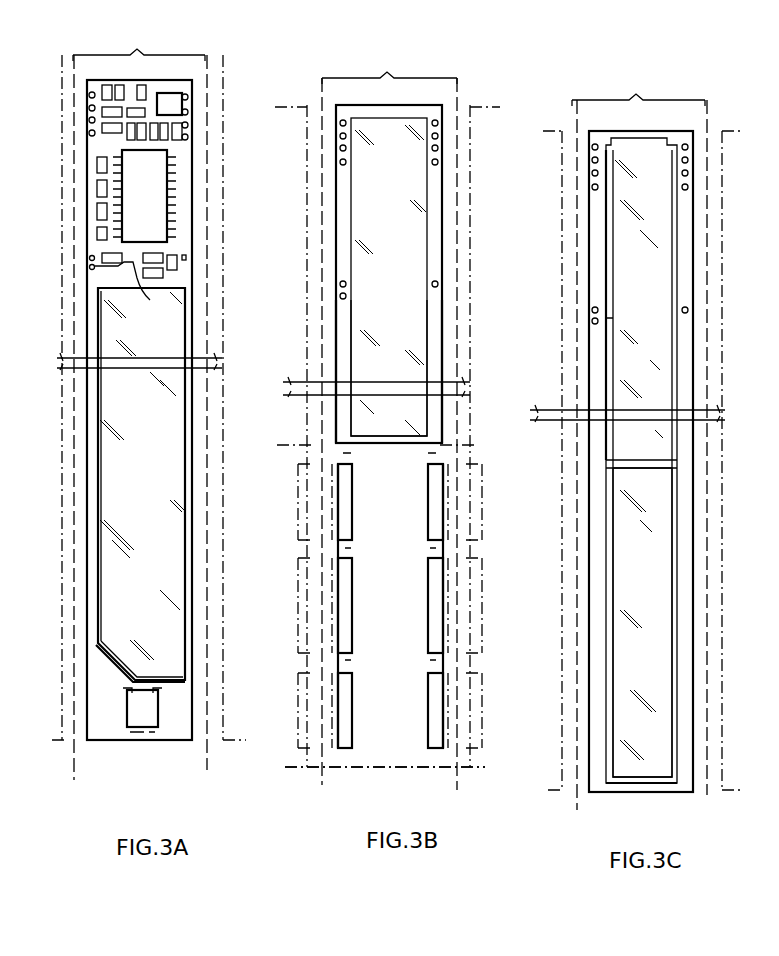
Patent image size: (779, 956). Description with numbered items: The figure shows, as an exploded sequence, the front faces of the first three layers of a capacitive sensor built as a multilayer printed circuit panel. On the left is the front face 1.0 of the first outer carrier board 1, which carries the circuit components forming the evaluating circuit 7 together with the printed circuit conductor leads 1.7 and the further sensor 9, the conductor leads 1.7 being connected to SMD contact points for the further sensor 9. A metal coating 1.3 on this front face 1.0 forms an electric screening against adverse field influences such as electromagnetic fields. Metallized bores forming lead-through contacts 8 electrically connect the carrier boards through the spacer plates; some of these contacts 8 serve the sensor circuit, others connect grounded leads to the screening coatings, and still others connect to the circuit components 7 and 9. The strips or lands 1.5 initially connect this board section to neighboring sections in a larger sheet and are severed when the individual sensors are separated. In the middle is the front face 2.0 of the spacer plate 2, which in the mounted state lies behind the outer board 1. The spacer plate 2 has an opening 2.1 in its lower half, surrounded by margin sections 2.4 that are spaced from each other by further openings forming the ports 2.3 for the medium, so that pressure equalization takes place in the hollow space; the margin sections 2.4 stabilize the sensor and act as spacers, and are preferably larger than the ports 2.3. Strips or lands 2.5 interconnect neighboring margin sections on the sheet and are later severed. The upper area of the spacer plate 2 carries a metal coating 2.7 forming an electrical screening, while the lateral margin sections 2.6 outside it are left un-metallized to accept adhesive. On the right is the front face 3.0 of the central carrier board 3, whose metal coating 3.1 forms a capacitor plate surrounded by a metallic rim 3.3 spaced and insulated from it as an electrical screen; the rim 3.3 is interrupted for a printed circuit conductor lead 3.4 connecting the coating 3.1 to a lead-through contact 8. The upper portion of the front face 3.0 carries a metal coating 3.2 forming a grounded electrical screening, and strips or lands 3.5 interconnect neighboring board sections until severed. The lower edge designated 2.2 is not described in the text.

In FIG. 3A, the first outer carrier board 1 is at (230, 319).
In FIG. 3A, the front face of first outer carrier board 1.0 is at (139, 42).
In FIG. 3A, the metal coating 1.3 is at (167, 330).
In FIG. 3A, the strips or lands 1.5 is at (72, 755).
In FIG. 3A, the printed circuit conductor leads 1.7 is at (160, 302).
In FIG. 3A, the evaluating circuit 7 is at (210, 198).
In FIG. 3A, the lead-through contacts 8 is at (88, 130).
In FIG. 3B, the lead-through contacts 8 is at (348, 286).
In FIG. 3C, the lead-through contacts 8 is at (775, 322).
In FIG. 3A, the further sensor 9 is at (158, 722).
In FIG. 3B, the spacer plate 2 is at (472, 283).
In FIG. 3B, the front face of spacer plate 2.0 is at (389, 66).
In FIG. 3B, the opening 2.1 is at (420, 615).
In FIG. 3B, the lower edge 2.2 is at (388, 752).
In FIG. 3B, the ports 2.3 is at (426, 457).
In FIG. 3B, the margin sections 2.4 is at (338, 512).
In FIG. 3B, the strips or lands 2.5 is at (320, 453).
In FIG. 3B, the lateral margin sections 2.6 is at (347, 323).
In FIG. 3B, the metal coating 2.7 is at (415, 417).
In FIG. 3C, the central carrier board 3 is at (730, 600).
In FIG. 3C, the front face of intermediate carrier board 3.0 is at (638, 87).
In FIG. 3C, the metal coating 3.1 is at (633, 688).
In FIG. 3C, the metal coating 3.2 is at (658, 379).
In FIG. 3C, the metallic margin or rim 3.3 is at (642, 786).
In FIG. 3C, the printed circuit conductor lead 3.4 is at (607, 400).
In FIG. 3C, the strips or lands 3.5 is at (568, 750).